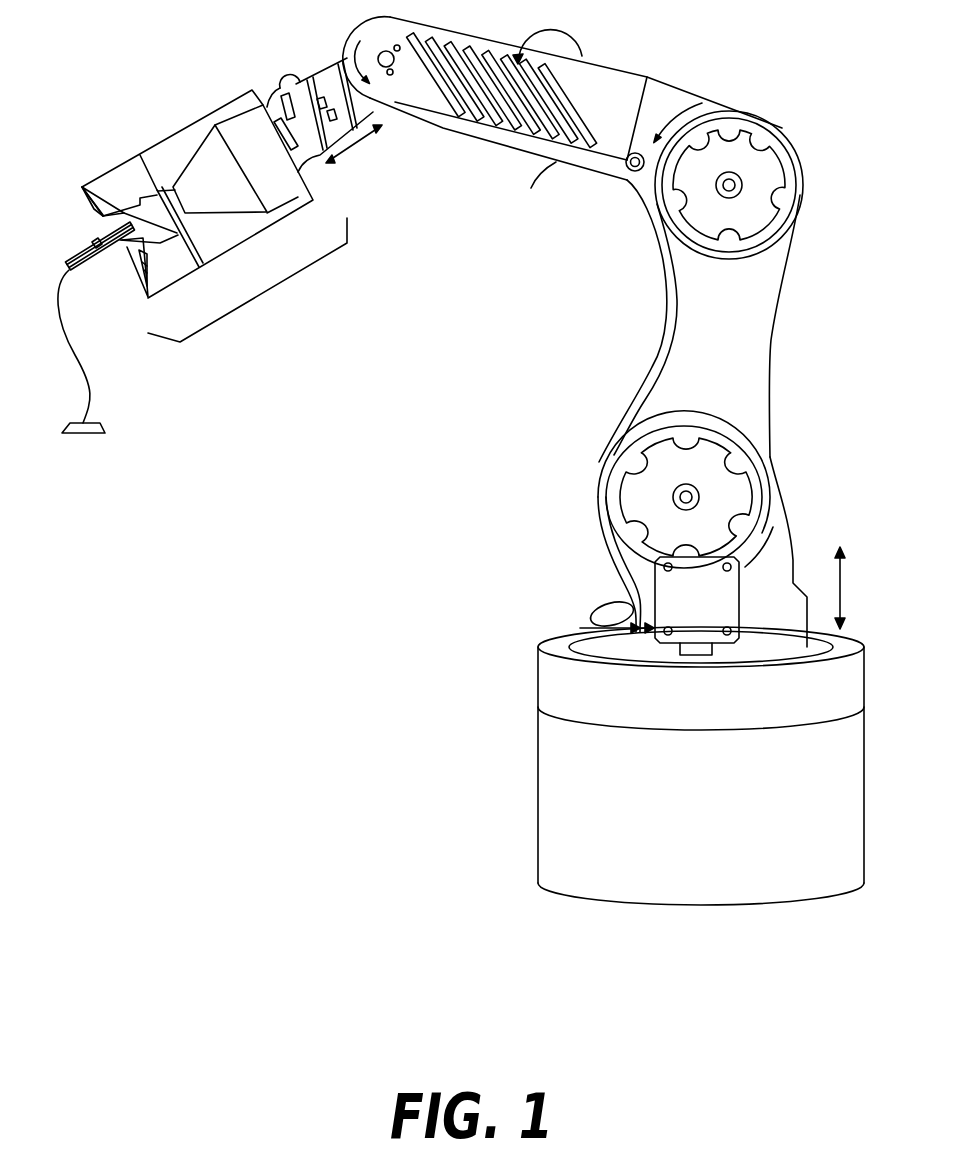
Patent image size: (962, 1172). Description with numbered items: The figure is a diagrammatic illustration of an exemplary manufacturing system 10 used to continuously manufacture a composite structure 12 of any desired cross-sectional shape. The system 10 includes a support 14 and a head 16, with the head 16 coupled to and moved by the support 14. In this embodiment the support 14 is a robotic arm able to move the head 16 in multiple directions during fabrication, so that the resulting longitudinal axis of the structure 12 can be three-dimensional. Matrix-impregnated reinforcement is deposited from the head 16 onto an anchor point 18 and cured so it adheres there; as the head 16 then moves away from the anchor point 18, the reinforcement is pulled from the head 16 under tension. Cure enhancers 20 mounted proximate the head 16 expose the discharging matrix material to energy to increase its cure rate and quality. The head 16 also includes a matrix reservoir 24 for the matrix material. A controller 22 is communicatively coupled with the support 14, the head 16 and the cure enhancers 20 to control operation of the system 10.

The system 10 is at (368, 672).
The composite structure 12 is at (88, 390).
The support 14 is at (705, 386).
The head 16 is at (273, 290).
The anchor point 18 is at (78, 437).
The cure enhancer 20 is at (93, 208).
The controller 22 is at (686, 613).
The matrix reservoir 24 is at (201, 195).